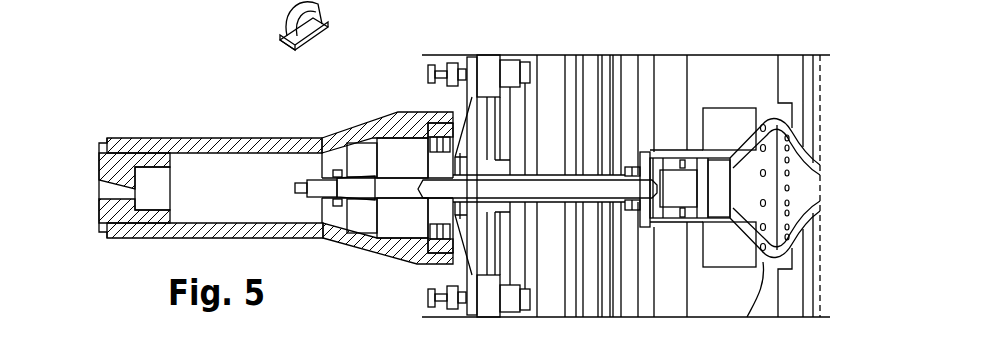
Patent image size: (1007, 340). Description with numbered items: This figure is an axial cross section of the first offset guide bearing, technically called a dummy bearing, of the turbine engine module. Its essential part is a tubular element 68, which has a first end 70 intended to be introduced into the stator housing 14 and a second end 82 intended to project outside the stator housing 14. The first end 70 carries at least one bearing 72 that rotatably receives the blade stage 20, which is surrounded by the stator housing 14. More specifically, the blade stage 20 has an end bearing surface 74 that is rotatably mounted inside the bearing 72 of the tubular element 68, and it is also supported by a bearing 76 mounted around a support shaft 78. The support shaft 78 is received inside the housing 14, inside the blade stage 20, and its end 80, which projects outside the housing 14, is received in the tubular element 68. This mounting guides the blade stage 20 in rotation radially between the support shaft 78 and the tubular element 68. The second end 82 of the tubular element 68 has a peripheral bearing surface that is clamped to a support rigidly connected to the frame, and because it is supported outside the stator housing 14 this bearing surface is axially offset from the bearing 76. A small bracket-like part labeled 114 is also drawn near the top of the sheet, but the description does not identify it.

The stator housing 14 is at (552, 75).
The blade stage 20 is at (740, 150).
The tubular element 68 is at (240, 140).
The first end 70 is at (397, 122).
The bearing 72 is at (437, 128).
The end bearing surface 74 is at (650, 152).
The bearing 76 is at (678, 160).
The support shaft 78 is at (398, 188).
The end 80 is at (322, 190).
The second end 82 is at (140, 137).
The clamp 114 is at (250, 0).